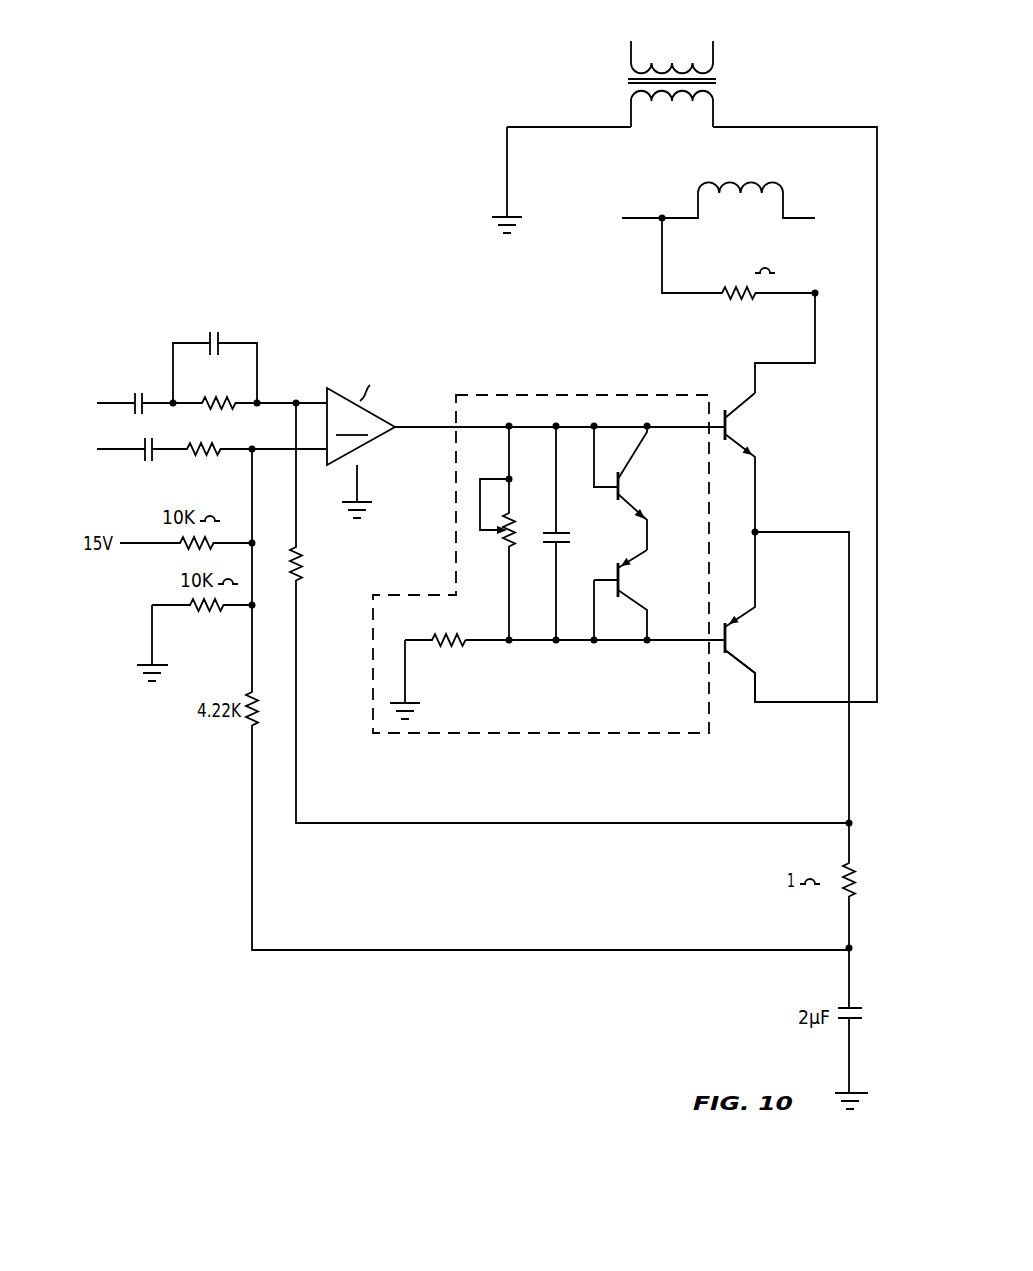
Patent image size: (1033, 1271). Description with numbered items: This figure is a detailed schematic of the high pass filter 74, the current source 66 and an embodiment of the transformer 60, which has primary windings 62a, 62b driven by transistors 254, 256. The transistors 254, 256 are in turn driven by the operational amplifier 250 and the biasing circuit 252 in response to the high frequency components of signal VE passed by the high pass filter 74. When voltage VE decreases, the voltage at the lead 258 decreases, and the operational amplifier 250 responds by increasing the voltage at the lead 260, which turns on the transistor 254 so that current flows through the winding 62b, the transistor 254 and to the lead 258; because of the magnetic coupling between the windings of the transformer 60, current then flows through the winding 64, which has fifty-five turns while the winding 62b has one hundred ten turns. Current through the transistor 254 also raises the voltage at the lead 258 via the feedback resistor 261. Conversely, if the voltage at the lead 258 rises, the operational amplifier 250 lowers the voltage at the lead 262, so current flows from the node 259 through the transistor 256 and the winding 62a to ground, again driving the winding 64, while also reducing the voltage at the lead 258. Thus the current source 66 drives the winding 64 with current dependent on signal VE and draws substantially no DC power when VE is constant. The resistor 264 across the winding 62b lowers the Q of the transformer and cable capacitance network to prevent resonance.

The transformer 60 is at (722, 81).
The winding 64 is at (718, 52).
The primary winding 62a is at (722, 113).
The primary winding 62b is at (793, 200).
The resistor 264 is at (737, 298).
The high pass filter 74 is at (261, 282).
The lead 258 is at (277, 400).
The current source 66 is at (372, 389).
The operational amplifier 250 is at (361, 426).
The lead 260 is at (407, 433).
The feedback resistor 261 is at (310, 562).
The biasing circuit 252 is at (523, 393).
The lead 262 is at (527, 645).
The transistor 254 is at (752, 411).
The transistor 256 is at (752, 626).
The node 259 is at (846, 822).